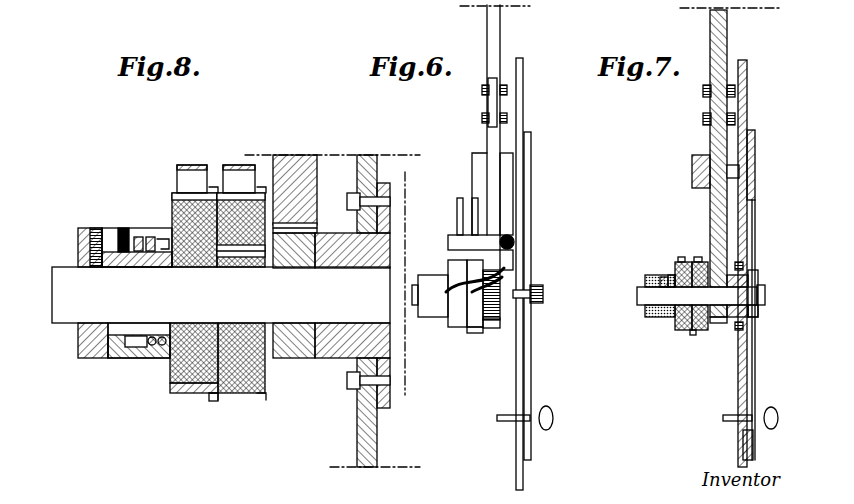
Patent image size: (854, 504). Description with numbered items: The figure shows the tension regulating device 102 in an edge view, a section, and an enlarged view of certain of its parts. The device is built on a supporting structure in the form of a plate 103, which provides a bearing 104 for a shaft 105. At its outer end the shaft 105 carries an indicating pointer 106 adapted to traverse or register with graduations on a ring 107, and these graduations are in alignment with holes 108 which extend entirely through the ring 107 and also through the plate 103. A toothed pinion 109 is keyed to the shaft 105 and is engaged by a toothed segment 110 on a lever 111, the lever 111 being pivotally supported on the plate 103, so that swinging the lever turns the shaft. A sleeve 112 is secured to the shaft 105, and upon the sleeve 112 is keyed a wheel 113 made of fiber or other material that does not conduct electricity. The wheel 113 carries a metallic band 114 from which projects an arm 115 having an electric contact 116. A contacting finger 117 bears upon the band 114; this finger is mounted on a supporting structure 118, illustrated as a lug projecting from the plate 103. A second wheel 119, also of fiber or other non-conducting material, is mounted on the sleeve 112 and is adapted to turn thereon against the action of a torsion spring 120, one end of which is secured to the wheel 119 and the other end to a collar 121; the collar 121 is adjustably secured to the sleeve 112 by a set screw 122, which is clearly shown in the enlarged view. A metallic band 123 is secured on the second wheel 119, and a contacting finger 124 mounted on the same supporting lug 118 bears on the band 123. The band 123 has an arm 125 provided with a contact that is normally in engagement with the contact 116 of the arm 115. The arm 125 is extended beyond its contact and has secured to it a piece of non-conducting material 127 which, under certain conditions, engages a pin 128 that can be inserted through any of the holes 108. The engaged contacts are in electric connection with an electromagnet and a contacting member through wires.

In FIG. 6, the tension regulating device 102 is at (535, 274).
In FIG. 7, the tension regulating device 102 is at (765, 263).
In FIG. 8, the plate 103 is at (372, 440).
In FIG. 6, the plate 103 is at (526, 104).
In FIG. 7, the plate 103 is at (744, 104).
In FIG. 8, the bearing 104 is at (336, 358).
In FIG. 7, the bearing 104 is at (758, 316).
In FIG. 8, the shaft 105 is at (221, 295).
In FIG. 7, the shaft 105 is at (745, 296).
In FIG. 7, the indicating pointer 106 is at (760, 270).
In FIG. 6, the ring 107 is at (520, 233).
In FIG. 7, the ring 107 is at (752, 232).
In FIG. 7, the holes 108 is at (754, 446).
In FIG. 8, the toothed pinion 109 is at (298, 358).
In FIG. 6, the toothed pinion 109 is at (516, 314).
In FIG. 7, the toothed pinion 109 is at (718, 324).
In FIG. 8, the toothed segment 110 is at (300, 180).
In FIG. 6, the toothed segment 110 is at (516, 252).
In FIG. 7, the toothed segment 110 is at (722, 264).
In FIG. 6, the lever 111 is at (497, 40).
In FIG. 7, the lever 111 is at (715, 137).
In FIG. 8, the sleeve 112 is at (88, 358).
In FIG. 6, the sleeve 112 is at (428, 318).
In FIG. 7, the sleeve 112 is at (650, 318).
In FIG. 8, the wheel 113 is at (255, 405).
In FIG. 6, the wheel 113 is at (482, 334).
In FIG. 7, the wheel 113 is at (700, 332).
In FIG. 8, the metallic band 114 is at (225, 404).
In FIG. 6, the metallic band 114 is at (476, 330).
In FIG. 7, the metallic band 114 is at (690, 335).
In FIG. 6, the arm 115 is at (500, 297).
In FIG. 6, the electric contact 116 is at (508, 280).
In FIG. 8, the contacting finger 117 is at (236, 178).
In FIG. 6, the contacting finger 117 is at (452, 264).
In FIG. 7, the contacting finger 117 is at (698, 262).
In FIG. 6, the supporting structure 118 is at (455, 236).
In FIG. 8, the second wheel 119 is at (178, 370).
In FIG. 6, the second wheel 119 is at (466, 328).
In FIG. 7, the second wheel 119 is at (676, 330).
In FIG. 8, the torsion spring 120 is at (150, 236).
In FIG. 6, the torsion spring 120 is at (516, 270).
In FIG. 7, the torsion spring 120 is at (672, 272).
In FIG. 8, the collar 121 is at (122, 358).
In FIG. 7, the collar 121 is at (660, 278).
In FIG. 8, the set screw 122 is at (123, 230).
In FIG. 8, the metallic band 123 is at (190, 395).
In FIG. 6, the metallic band 123 is at (458, 328).
In FIG. 7, the metallic band 123 is at (684, 338).
In FIG. 8, the contacting finger 124 is at (192, 178).
In FIG. 6, the contacting finger 124 is at (450, 248).
In FIG. 7, the contacting finger 124 is at (680, 262).
In FIG. 6, the arm 125 is at (450, 318).
In FIG. 6, the piece of non-conducting material 127 is at (512, 238).
In FIG. 6, the pin 128 is at (553, 418).
In FIG. 7, the pin 128 is at (772, 406).